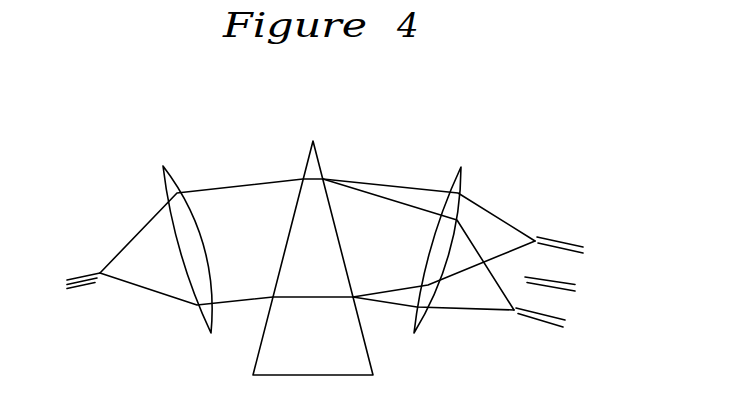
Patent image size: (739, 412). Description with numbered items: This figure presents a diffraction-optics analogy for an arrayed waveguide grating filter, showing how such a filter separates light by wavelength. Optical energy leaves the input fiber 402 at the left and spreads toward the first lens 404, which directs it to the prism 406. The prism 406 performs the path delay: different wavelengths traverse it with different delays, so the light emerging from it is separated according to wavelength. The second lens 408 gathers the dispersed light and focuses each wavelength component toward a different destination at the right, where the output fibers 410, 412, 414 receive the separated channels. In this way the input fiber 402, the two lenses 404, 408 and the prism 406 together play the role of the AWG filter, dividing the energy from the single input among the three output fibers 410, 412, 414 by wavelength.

The input fiber 402 is at (69, 298).
The lens 404 is at (170, 237).
The prism 406 is at (313, 238).
The lens 408 is at (453, 232).
The output fiber 410 is at (587, 252).
The output fiber 412 is at (580, 292).
The output fiber 414 is at (572, 330).